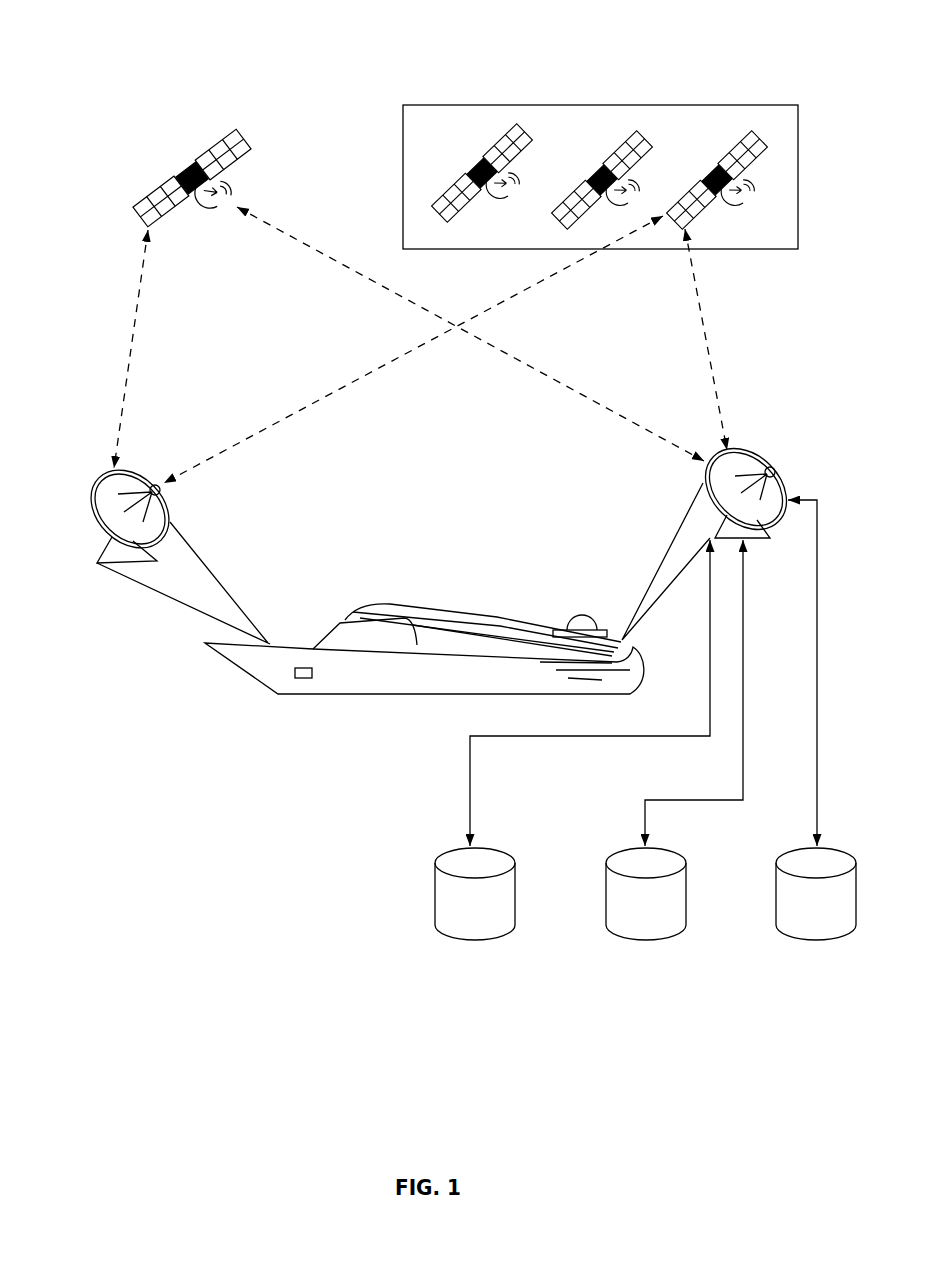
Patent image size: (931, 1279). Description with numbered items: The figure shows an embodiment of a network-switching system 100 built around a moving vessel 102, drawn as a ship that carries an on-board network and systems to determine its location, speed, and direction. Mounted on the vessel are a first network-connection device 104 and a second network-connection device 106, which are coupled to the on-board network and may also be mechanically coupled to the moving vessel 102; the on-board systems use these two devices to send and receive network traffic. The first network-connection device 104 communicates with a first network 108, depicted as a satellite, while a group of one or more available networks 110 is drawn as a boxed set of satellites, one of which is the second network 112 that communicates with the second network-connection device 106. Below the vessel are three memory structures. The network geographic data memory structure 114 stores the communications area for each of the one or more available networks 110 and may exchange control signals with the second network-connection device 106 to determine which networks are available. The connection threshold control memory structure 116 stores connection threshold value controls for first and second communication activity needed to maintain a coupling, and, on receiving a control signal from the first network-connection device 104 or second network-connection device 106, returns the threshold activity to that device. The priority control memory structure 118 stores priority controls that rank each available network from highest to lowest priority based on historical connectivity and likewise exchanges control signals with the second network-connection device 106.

The network-switching system 100 is at (781, 72).
The moving vessel 102 is at (340, 698).
The first network-connection device 104 is at (92, 490).
The second network-connection device 106 is at (772, 470).
The first network 108 is at (137, 212).
The one or more available networks 110 is at (588, 174).
The second network 112 is at (752, 206).
The network geographic data memory structure 114 is at (779, 925).
The connection threshold control memory structure 116 is at (606, 924).
The priority control memory structure 118 is at (435, 925).